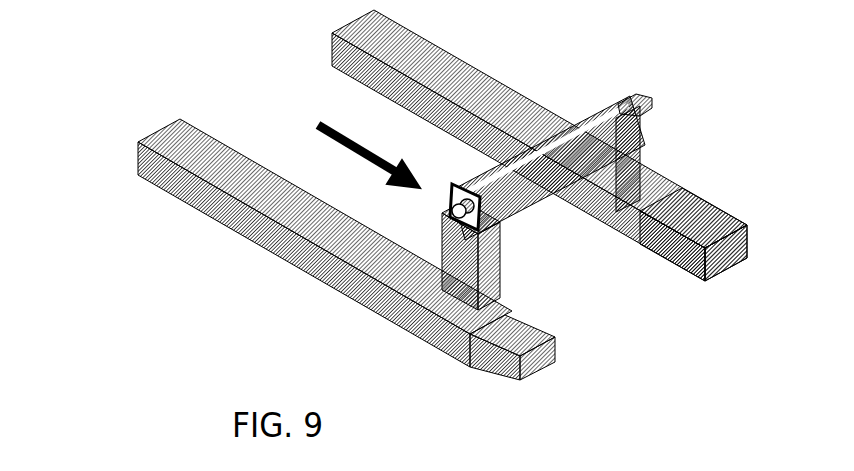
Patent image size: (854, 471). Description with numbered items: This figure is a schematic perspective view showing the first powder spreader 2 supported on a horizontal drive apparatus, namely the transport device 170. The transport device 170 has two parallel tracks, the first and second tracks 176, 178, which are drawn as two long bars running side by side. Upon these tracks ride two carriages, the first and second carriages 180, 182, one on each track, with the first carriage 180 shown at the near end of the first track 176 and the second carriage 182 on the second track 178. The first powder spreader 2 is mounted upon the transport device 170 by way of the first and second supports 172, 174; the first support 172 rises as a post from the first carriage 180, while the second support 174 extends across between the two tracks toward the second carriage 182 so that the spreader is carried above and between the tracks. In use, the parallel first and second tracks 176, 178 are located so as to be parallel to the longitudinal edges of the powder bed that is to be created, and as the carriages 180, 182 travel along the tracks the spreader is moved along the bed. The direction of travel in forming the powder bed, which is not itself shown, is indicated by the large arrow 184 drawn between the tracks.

The first powder spreader 2 is at (628, 62).
The transport device 170 is at (402, 196).
The first support 172 is at (478, 258).
The second support 174 is at (637, 180).
The first track 176 is at (197, 172).
The second track 178 is at (423, 43).
The first carriage 180 is at (470, 307).
The second carriage 182 is at (657, 197).
The arrow 184 is at (337, 132).